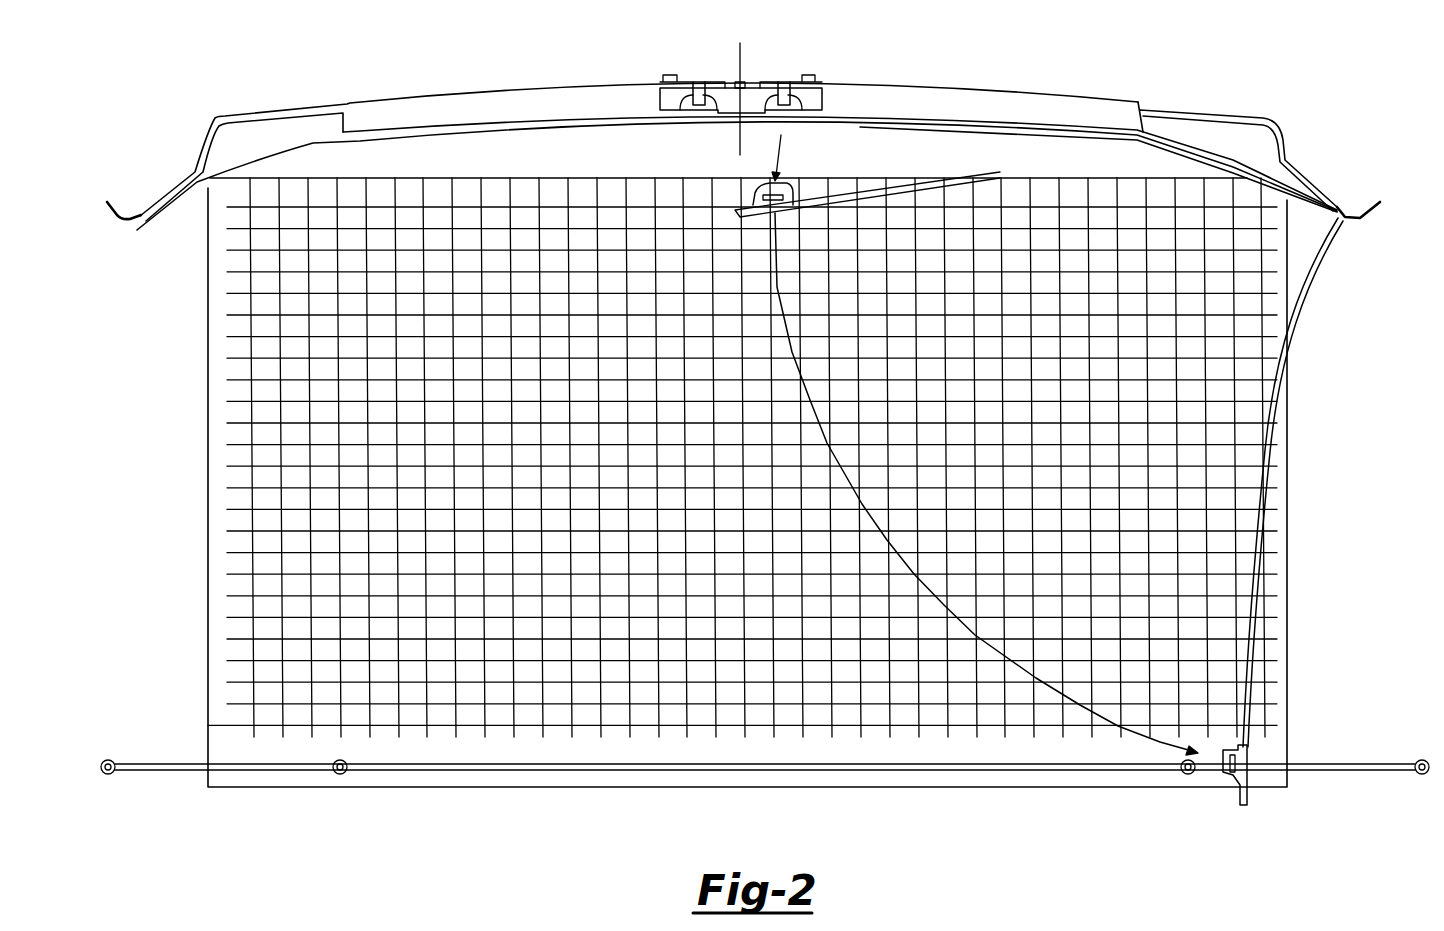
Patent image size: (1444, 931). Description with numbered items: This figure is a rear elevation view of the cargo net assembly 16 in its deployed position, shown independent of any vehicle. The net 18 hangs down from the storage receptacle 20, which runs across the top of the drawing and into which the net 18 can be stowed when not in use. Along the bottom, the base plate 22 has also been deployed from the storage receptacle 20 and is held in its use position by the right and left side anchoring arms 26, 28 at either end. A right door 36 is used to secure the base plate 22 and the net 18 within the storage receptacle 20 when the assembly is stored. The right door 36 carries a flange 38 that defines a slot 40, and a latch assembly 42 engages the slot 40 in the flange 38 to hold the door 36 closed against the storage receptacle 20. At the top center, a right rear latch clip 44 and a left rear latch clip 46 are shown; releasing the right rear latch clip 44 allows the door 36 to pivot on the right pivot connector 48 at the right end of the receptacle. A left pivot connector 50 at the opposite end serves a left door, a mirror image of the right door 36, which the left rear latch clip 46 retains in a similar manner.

The cargo net assembly 16 is at (1312, 124).
The net 18 is at (252, 327).
The storage receptacle 20 is at (933, 97).
The base plate 22 is at (563, 777).
The right side anchoring arm 26 is at (1385, 758).
The left side anchoring arm 28 is at (172, 757).
The right door 36 is at (1308, 278).
The flange 38 is at (755, 193).
The slot 40 is at (792, 200).
The latch assembly 42 is at (688, 74).
The right rear latch clip 44 is at (783, 83).
The left rear latch clip 46 is at (698, 84).
The right pivot connector 48 is at (1346, 208).
The left pivot connector 50 is at (137, 208).